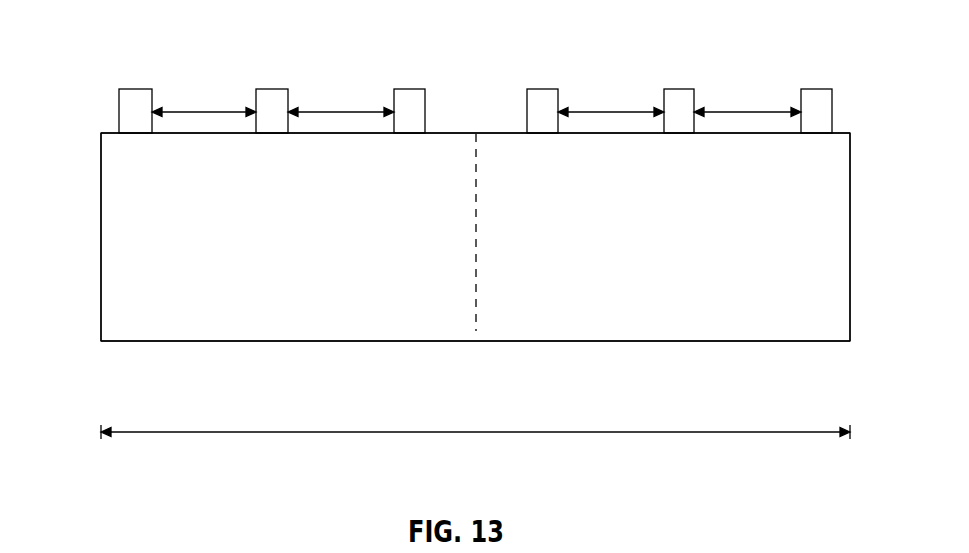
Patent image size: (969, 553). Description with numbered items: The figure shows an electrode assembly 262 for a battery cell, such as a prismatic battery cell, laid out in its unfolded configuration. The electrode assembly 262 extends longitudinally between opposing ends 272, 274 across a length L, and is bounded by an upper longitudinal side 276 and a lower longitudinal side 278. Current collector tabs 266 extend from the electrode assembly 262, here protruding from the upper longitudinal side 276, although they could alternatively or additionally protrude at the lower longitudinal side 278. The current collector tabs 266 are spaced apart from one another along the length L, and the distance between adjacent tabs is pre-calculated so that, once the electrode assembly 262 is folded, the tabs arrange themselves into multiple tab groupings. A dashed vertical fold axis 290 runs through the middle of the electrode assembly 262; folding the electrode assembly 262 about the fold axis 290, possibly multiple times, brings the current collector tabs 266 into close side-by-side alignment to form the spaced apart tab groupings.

The electrode assembly 262 is at (833, 182).
The current collector tabs 266 is at (138, 89).
The opposing end 272 is at (100, 238).
The opposing end 274 is at (852, 237).
The upper longitudinal side 276 is at (459, 133).
The lower longitudinal side 278 is at (591, 343).
The fold axis 290 is at (477, 237).
The length L is at (477, 433).